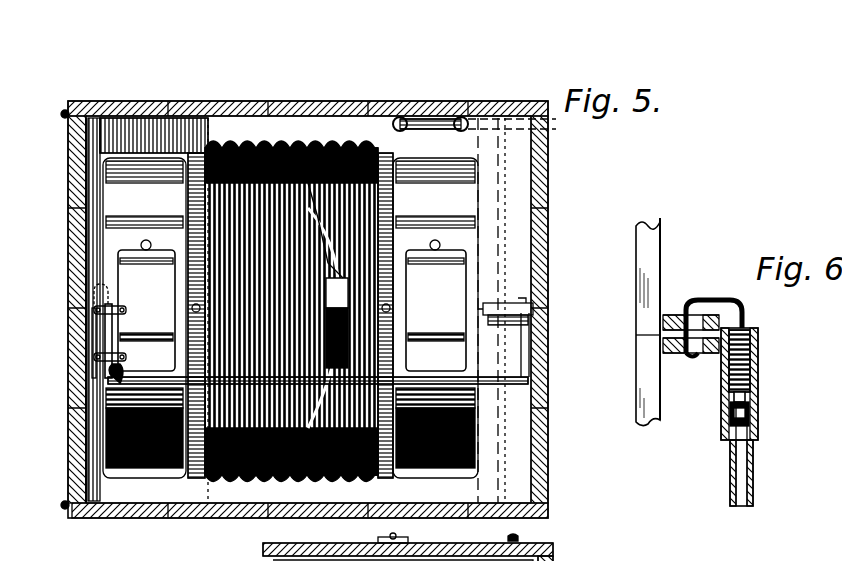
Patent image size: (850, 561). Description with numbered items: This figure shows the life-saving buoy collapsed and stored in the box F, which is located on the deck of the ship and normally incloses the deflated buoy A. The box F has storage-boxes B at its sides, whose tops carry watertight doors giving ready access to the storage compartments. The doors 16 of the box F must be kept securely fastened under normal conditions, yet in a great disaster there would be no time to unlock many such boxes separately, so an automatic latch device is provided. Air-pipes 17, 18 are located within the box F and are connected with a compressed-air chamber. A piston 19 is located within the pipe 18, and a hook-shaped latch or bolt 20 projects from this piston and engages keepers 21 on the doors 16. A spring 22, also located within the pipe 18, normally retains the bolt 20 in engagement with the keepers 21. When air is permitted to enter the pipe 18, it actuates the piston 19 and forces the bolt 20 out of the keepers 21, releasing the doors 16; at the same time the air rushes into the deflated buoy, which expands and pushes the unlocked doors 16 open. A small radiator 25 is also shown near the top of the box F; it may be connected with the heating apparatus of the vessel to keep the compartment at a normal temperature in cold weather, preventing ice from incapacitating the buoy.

In FIG. 5, the box F is at (304, 296).
In FIG. 5, the coil A is at (291, 299).
In FIG. 5, the storage-boxes B is at (290, 318).
In FIG. 5, the radiator 25 is at (425, 110).
In FIG. 5, the air-pipe 17 is at (138, 372).
In FIG. 6, the air-pipe 17 is at (757, 454).
In FIG. 5, the keepers 21 is at (80, 302).
In FIG. 5, the hook-shaped latch or bolt 20 is at (102, 292).
In FIG. 6, the hook-shaped latch or bolt 20 is at (738, 300).
In FIG. 5, the doors 16 is at (62, 325).
In FIG. 6, the doors 16 is at (652, 250).
In FIG. 5, the air-pipe 18 is at (97, 336).
In FIG. 6, the air-pipe 18 is at (750, 378).
In FIG. 6, the spring 22 is at (750, 352).
In FIG. 6, the piston 19 is at (722, 408).